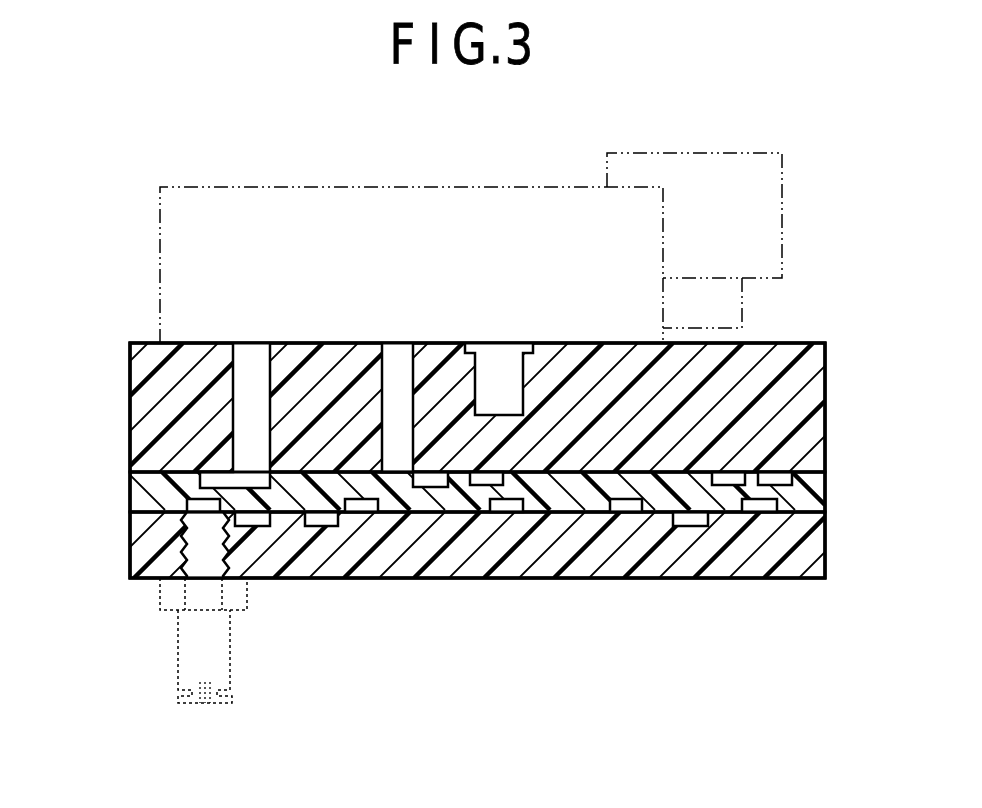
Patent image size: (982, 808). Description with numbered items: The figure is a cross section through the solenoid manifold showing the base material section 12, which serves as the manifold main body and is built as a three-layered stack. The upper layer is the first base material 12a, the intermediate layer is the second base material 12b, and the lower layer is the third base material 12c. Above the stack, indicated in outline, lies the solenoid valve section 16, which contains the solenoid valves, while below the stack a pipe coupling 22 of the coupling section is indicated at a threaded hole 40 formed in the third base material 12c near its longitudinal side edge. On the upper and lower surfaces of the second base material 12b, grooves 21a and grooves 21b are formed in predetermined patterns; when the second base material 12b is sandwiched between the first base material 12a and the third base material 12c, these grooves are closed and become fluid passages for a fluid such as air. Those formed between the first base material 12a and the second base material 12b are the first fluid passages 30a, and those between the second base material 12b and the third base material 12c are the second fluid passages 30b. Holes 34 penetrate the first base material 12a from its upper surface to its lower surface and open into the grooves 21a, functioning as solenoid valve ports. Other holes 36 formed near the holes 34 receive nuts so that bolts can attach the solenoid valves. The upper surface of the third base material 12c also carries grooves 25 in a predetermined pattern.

The base material section 12 is at (111, 143).
The first base material 12a is at (134, 411).
The second base material 12b is at (134, 493).
The third base material 12c is at (134, 547).
The solenoid valve section 16 is at (560, 187).
The grooves 21a is at (213, 497).
The grooves 21b is at (758, 505).
The pipe coupling 22 is at (236, 670).
The grooves 25 is at (322, 525).
The first fluid passages 30a is at (779, 474).
The second fluid passages 30b is at (623, 505).
The holes 34 is at (250, 362).
The other holes 36 is at (502, 365).
The threaded holes 40 is at (205, 537).